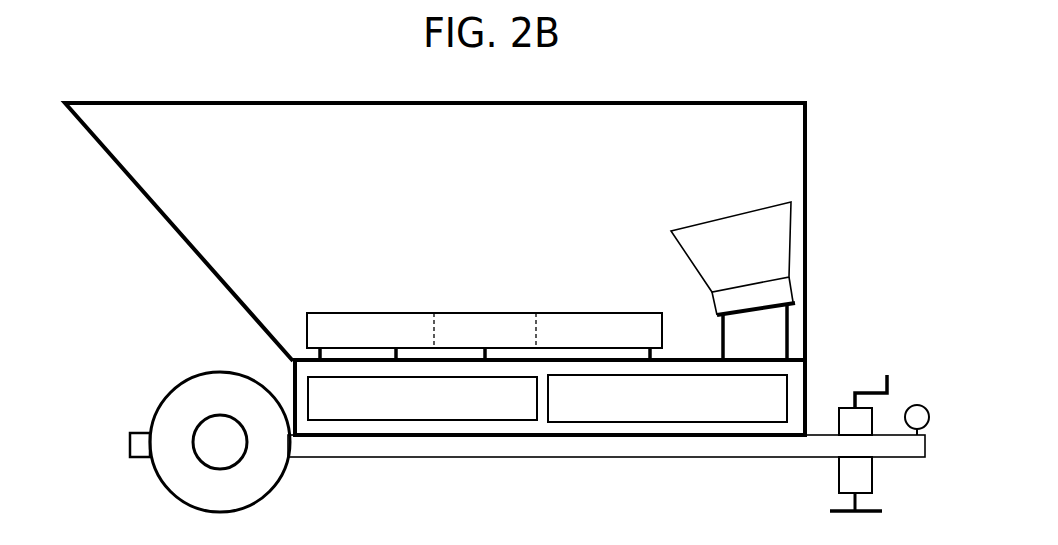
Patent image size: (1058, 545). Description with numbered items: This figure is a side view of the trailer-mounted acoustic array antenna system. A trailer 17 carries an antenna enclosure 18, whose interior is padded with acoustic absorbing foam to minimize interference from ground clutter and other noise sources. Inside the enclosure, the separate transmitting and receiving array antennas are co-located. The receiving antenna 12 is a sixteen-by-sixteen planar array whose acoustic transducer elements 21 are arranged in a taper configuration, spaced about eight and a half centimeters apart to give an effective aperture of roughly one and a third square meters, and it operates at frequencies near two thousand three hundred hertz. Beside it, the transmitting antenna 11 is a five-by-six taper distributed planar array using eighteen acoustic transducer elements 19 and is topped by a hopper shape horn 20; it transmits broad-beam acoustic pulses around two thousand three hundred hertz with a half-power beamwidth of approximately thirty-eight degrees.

The antenna enclosure 18 is at (209, 132).
The trailer 17 is at (632, 448).
The receiving antenna 12 is at (484, 309).
The acoustic transducer elements 21 is at (412, 328).
The hopper shape horn 20 is at (723, 228).
The transmitting antenna 11 is at (696, 310).
The acoustic transducer elements 19 is at (715, 297).